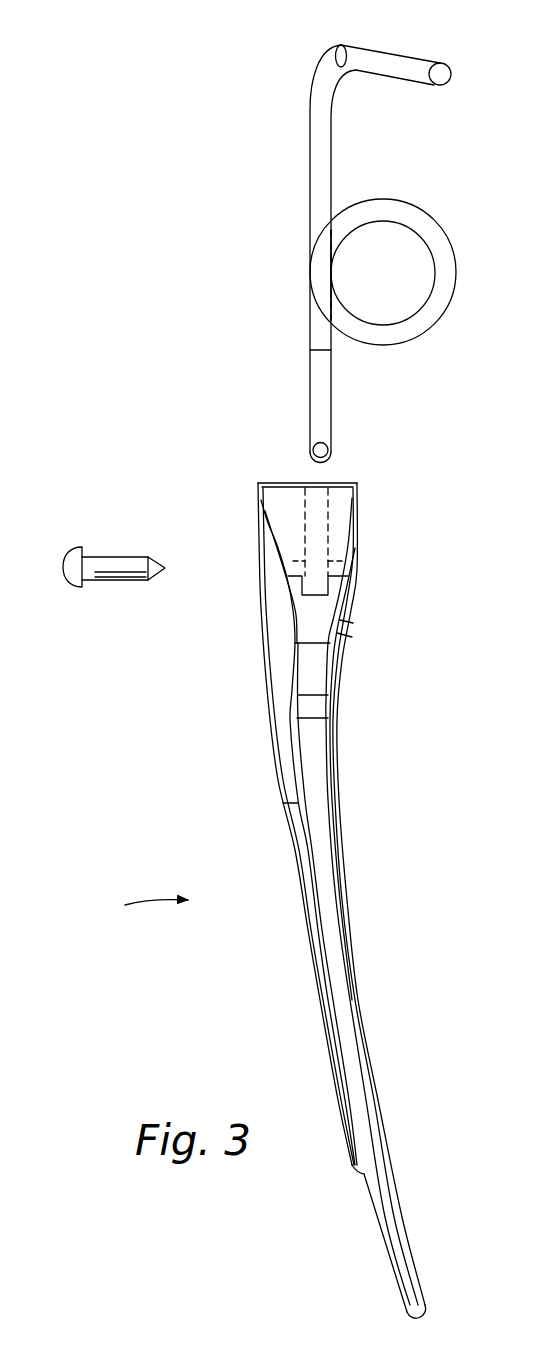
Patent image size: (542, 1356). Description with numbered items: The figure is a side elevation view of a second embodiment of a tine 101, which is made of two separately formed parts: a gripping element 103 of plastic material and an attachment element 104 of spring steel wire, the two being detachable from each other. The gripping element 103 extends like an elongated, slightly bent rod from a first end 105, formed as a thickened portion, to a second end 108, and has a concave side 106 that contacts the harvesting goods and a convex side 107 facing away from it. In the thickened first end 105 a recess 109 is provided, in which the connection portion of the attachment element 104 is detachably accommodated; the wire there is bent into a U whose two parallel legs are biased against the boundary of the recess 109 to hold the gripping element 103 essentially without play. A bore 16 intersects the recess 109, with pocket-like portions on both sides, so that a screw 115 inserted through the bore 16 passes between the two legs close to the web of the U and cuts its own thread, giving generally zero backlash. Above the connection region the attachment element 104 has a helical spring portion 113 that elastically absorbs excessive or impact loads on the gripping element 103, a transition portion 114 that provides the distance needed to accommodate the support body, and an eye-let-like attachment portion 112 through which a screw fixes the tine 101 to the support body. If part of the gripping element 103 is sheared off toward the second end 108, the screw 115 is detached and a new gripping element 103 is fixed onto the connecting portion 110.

The tine 101 is at (198, 122).
The gripping element 103 is at (523, 690).
The attachment element 104 is at (272, 279).
The first end 105 is at (363, 477).
The concave side 106 is at (340, 863).
The convex side 107 is at (363, 1188).
The second end 108 is at (427, 1315).
The recess 109 is at (340, 528).
The connecting portion 110 is at (282, 755).
The attachment portion 112 is at (403, 62).
The spring portion 113 is at (442, 253).
The transition portion 114 is at (317, 162).
The screw 115 is at (105, 562).
The bore 16 is at (357, 583).